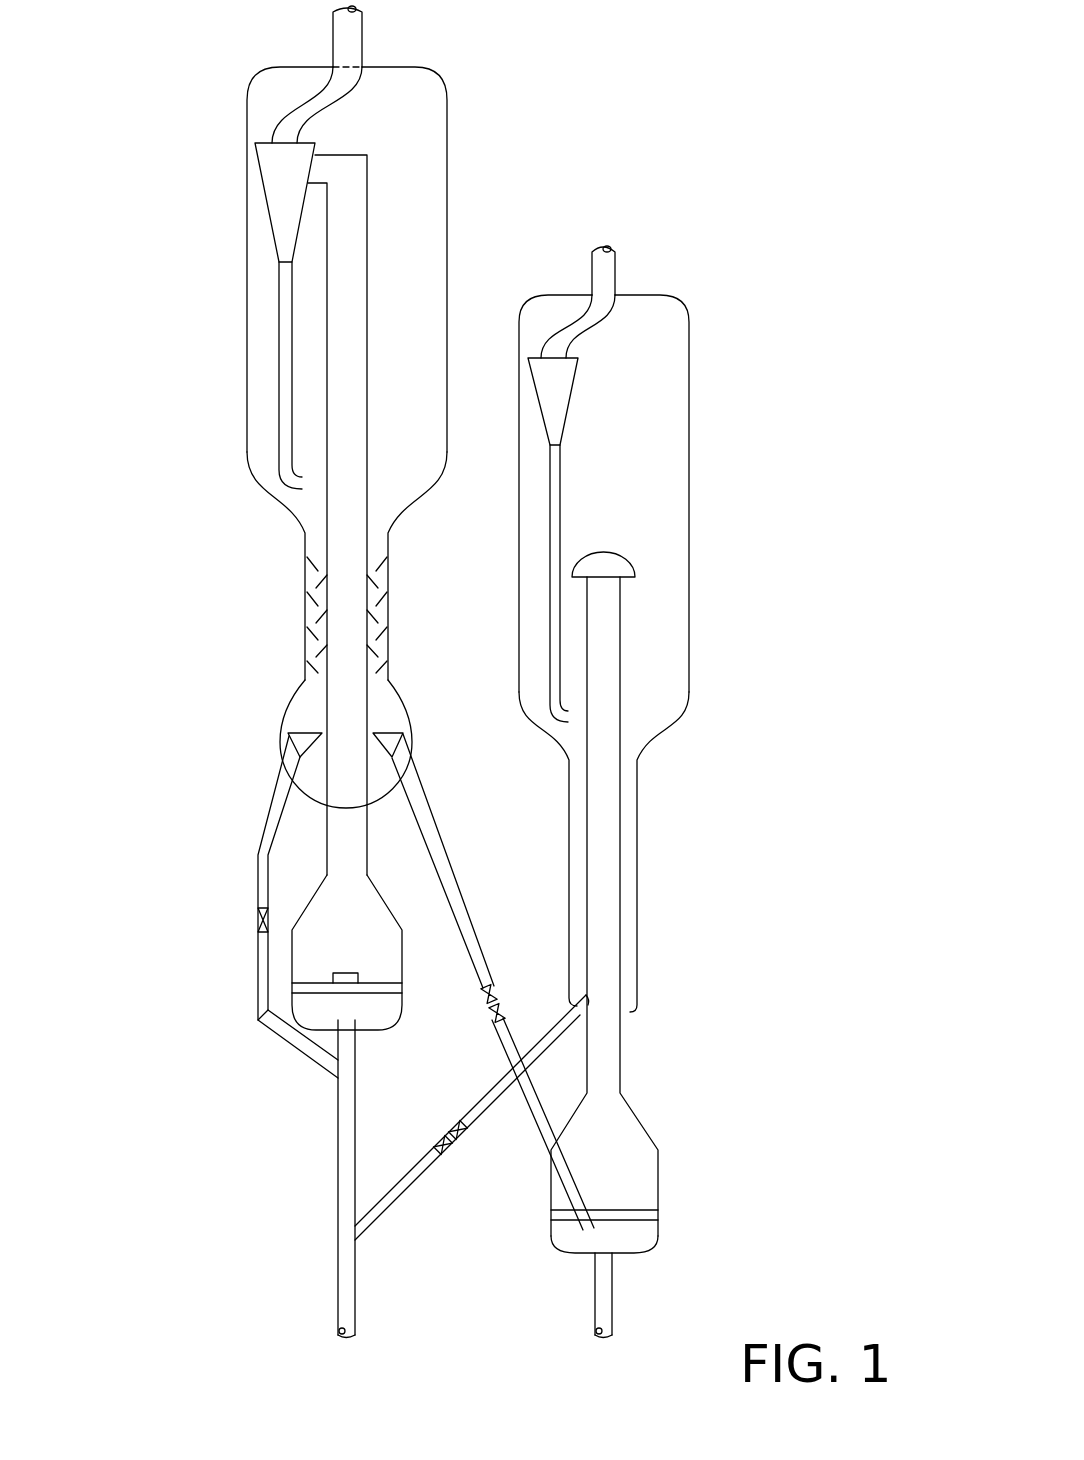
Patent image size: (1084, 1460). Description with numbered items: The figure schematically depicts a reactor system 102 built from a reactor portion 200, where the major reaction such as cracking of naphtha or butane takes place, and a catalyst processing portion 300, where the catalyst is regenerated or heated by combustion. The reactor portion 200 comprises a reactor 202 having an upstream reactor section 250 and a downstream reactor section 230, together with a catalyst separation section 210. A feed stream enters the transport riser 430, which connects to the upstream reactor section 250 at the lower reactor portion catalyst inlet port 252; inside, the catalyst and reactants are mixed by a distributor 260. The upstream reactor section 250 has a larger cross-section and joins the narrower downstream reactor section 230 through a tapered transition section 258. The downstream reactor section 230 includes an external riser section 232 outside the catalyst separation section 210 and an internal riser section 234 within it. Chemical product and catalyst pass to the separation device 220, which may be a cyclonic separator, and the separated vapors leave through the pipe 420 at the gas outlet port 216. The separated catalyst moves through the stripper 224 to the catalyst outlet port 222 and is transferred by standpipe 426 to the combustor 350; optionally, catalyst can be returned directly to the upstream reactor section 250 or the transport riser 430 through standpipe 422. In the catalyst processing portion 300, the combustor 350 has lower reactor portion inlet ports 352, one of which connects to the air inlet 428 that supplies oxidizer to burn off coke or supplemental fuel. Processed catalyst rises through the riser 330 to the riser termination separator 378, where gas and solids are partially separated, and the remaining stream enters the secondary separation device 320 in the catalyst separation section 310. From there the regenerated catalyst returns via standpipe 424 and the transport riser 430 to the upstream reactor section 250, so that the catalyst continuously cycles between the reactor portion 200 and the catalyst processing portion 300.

The reactor system 102 is at (502, 672).
The reactor portion 200 is at (334, 672).
The reactor 202 is at (330, 952).
The catalyst separation section 210 is at (247, 360).
The gas outlet port 216 is at (340, 64).
The separation device 220 is at (256, 160).
The catalyst outlet port 222 is at (398, 782).
The stripper 224 is at (312, 596).
The downstream reactor section 230 is at (327, 830).
The external riser section 232 is at (368, 845).
The internal riser section 234 is at (327, 513).
The upstream reactor section 250 is at (292, 937).
The lower reactor portion catalyst inlet port 252 is at (350, 1033).
The transition section 258 is at (312, 893).
The distributor 260 is at (276, 1018).
The catalyst processing portion 300 is at (642, 792).
The catalyst separation section 310 is at (689, 375).
The secondary separation device 320 is at (546, 435).
The riser 330 is at (620, 1071).
The combustor 350 is at (658, 1170).
The lower reactor portion inlet port 352 is at (600, 1260).
The riser termination separator 378 is at (610, 582).
The pipe 420 is at (362, 43).
The standpipe 422 is at (258, 970).
The standpipe 424 is at (430, 1173).
The standpipe 426 is at (475, 947).
The air inlet 428 is at (612, 1295).
The transport riser 430 is at (356, 1052).